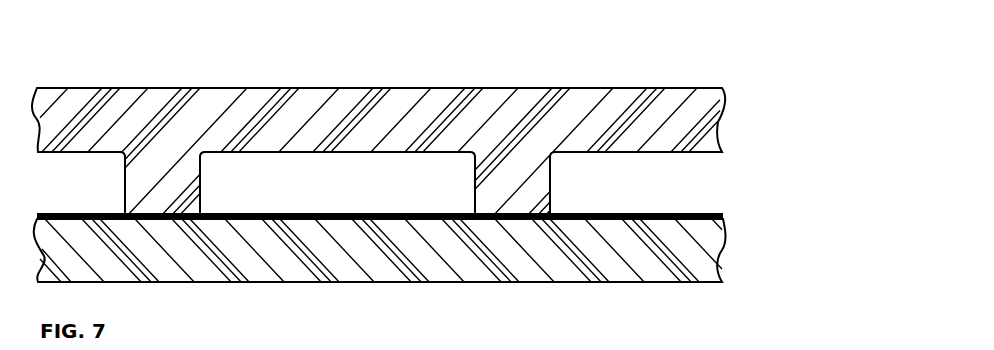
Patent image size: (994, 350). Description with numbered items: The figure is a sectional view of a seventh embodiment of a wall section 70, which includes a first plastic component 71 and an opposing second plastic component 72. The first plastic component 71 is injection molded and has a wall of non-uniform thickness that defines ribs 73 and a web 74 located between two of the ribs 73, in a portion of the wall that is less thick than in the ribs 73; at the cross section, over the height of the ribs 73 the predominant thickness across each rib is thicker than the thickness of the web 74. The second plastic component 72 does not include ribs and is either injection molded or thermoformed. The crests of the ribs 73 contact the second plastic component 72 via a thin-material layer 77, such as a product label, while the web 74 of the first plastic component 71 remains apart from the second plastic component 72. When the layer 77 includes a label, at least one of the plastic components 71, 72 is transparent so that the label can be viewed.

The wall section 70 is at (47, 84).
The first plastic component 71 is at (729, 103).
The second plastic component 72 is at (728, 249).
The ribs 73 is at (124, 194).
The web 74 is at (293, 157).
The thin-material layer 77 is at (650, 213).